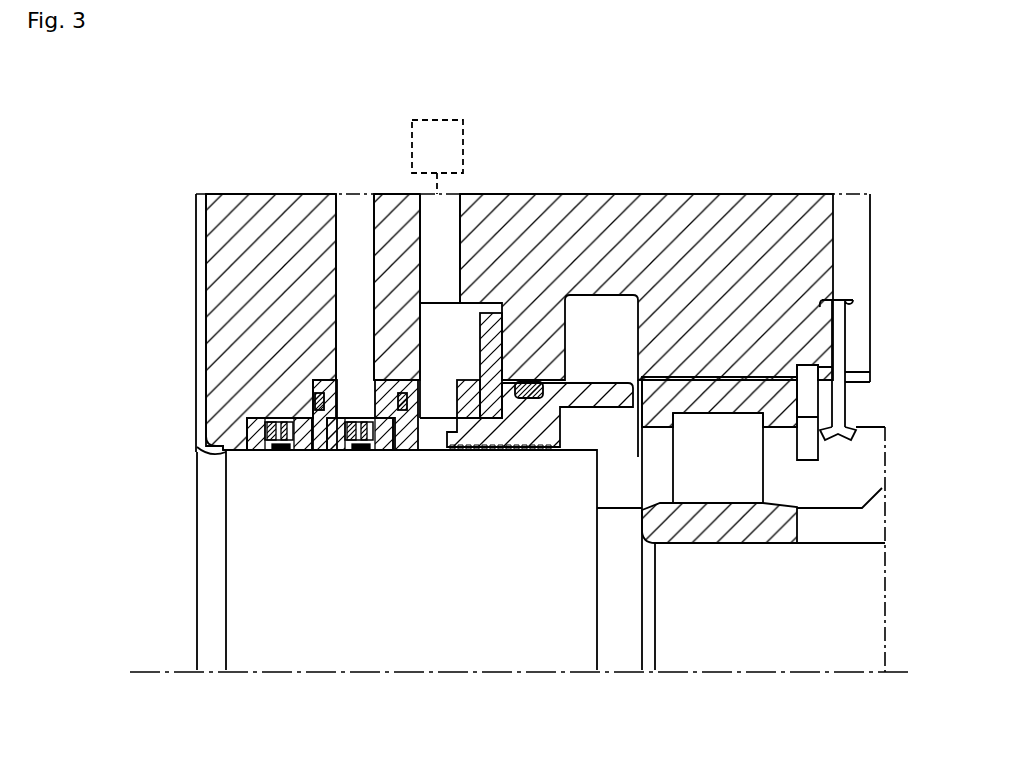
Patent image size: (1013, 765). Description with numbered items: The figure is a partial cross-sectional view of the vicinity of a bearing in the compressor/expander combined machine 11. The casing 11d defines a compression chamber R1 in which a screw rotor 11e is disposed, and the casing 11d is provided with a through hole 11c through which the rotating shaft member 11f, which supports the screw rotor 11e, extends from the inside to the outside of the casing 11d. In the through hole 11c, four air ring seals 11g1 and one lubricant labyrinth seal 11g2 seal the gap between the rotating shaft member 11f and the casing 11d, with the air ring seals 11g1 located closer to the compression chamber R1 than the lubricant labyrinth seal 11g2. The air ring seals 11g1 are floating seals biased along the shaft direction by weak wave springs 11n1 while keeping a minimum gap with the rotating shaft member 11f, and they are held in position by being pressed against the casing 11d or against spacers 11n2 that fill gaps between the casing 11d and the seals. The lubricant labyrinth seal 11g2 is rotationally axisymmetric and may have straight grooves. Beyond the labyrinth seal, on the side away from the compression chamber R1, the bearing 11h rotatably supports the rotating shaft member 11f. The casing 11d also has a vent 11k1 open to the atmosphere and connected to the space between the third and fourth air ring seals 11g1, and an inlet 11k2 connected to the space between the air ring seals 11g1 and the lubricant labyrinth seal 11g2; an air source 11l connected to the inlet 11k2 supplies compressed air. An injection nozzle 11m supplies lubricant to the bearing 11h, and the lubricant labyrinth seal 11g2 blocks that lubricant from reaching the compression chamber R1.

The compressor/expander combined machine 11 is at (825, 155).
The through hole 11c is at (747, 378).
The casing 11d is at (242, 207).
The screw rotor 11e is at (168, 658).
The rotating shaft member 11f is at (875, 565).
The air ring seal 11g1 is at (257, 452).
The lubricant labyrinth seal 11g2 is at (482, 452).
The bearing 11h is at (690, 377).
The vent 11k1 is at (360, 194).
The inlet 11k2 is at (455, 194).
The air source 11l is at (440, 120).
The injection nozzle 11m is at (845, 403).
The wave spring 11n1 is at (378, 400).
The spacer 11n2 is at (319, 392).
The compression chamber R1 is at (168, 575).